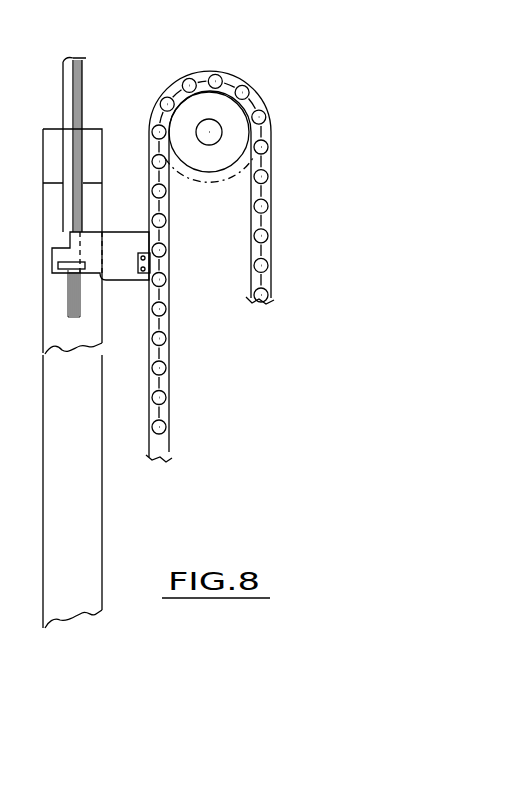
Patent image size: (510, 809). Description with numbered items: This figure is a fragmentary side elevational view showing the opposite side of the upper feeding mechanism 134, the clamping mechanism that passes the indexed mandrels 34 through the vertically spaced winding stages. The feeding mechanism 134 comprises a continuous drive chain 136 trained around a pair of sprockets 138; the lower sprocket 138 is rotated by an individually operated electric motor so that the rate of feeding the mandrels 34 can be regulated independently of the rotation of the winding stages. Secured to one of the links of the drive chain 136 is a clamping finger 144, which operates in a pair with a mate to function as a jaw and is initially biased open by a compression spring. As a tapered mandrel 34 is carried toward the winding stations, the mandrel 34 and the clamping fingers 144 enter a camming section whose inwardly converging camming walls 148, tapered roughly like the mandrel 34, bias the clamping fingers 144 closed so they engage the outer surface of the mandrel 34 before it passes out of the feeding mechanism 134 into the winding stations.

The mandrel 34 is at (75, 90).
The upper feeding mechanism 134 is at (243, 235).
The drive chain 136 is at (272, 222).
The sprocket 138 is at (231, 114).
The clamping finger 144 is at (125, 243).
The camming wall 148 is at (57, 150).